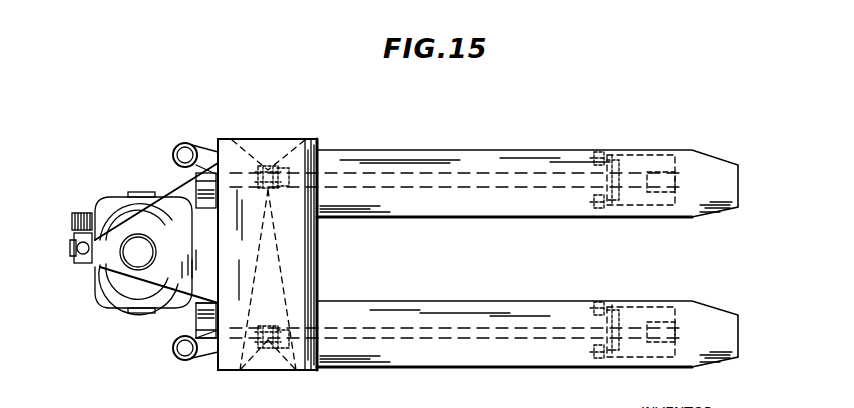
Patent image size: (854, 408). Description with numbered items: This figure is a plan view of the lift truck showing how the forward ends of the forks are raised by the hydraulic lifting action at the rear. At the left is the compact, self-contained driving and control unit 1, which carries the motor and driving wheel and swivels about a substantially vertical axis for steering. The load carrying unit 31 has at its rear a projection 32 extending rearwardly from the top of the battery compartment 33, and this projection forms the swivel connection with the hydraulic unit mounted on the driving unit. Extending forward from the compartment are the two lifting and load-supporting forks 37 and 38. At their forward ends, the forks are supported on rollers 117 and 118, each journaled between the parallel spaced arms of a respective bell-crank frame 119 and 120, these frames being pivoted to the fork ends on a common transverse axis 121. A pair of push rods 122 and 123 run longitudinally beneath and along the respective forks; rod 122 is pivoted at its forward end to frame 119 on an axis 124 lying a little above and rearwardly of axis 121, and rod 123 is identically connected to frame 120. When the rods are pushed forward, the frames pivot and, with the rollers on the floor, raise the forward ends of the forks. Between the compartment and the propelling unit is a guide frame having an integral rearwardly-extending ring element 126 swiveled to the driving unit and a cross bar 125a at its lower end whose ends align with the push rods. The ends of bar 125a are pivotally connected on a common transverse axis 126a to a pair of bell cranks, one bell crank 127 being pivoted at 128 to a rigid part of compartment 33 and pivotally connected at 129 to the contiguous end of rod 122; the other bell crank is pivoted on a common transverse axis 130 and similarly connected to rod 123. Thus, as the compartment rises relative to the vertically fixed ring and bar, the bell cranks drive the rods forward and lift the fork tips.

The driving and control unit 1 is at (85, 309).
The load carrying unit 31 is at (331, 287).
The projection 32 is at (156, 233).
The battery compartment 33 is at (318, 228).
The fork 37 is at (407, 366).
The fork 38 is at (397, 151).
The roller 117 is at (690, 322).
The roller 118 is at (680, 170).
The frame 119 is at (645, 308).
The frame 120 is at (636, 156).
The transverse axis 121 is at (612, 212).
The push rod 122 is at (447, 330).
The push rod 123 is at (489, 172).
The axis 124 is at (595, 218).
The cross bar 125a is at (200, 304).
The ring element 126 is at (118, 225).
The transverse axis 126a is at (196, 183).
The bell crank 127 is at (200, 143).
The pivot 128 is at (283, 162).
The pivotal connection 129 is at (258, 160).
The transverse axis 130 is at (272, 208).